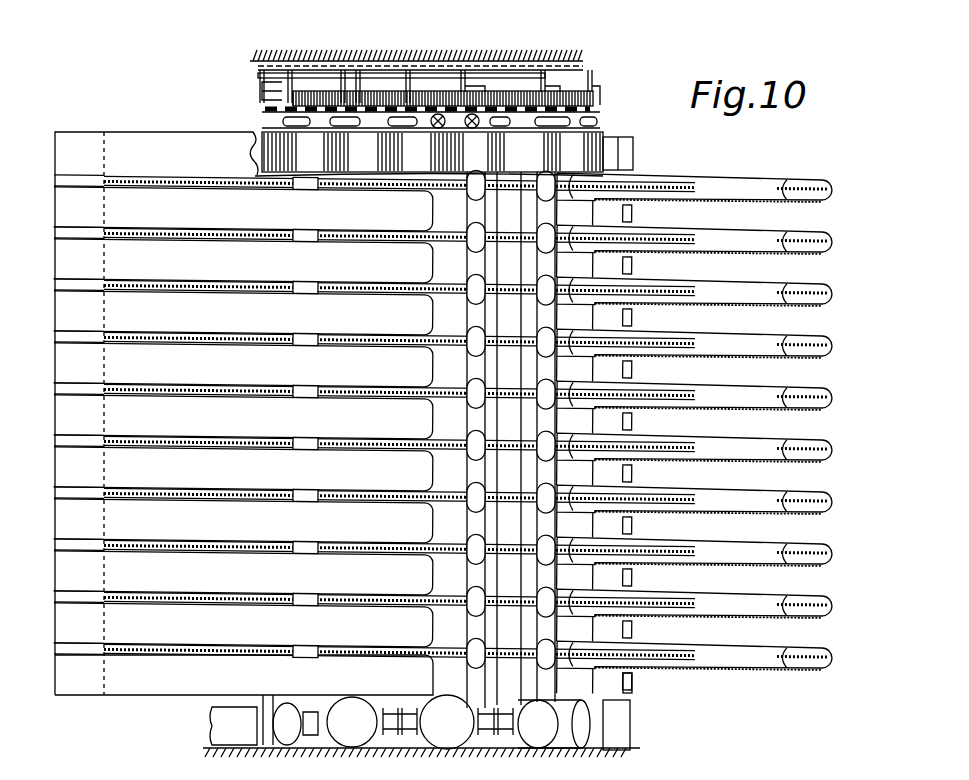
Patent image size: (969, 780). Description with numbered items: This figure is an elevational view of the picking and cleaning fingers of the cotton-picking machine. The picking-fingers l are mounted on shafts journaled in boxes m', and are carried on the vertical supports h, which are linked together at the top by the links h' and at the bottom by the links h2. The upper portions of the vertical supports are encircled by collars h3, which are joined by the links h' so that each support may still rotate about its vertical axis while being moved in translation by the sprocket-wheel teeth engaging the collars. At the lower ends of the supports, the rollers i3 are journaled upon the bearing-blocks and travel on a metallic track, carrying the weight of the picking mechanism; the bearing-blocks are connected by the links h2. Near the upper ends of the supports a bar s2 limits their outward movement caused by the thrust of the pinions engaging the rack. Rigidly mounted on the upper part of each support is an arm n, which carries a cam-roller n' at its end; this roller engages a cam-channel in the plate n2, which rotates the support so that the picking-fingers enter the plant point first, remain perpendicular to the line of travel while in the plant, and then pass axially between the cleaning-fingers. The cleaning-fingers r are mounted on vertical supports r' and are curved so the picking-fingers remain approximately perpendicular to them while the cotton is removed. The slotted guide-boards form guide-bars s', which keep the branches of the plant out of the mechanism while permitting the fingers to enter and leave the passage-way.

The cam-roller n' is at (406, 81).
The arm n is at (251, 90).
The plate n2 is at (582, 70).
The collar h3 is at (422, 172).
The link h' is at (446, 70).
The bar s2 is at (612, 150).
The picking-finger l is at (150, 652).
The cleaning-finger r is at (243, 438).
The vertical support r' is at (358, 430).
The box m' is at (496, 440).
The vertical support h is at (529, 438).
The guide-bar s' is at (633, 711).
The roller i3 is at (315, 765).
The link h2 is at (483, 765).